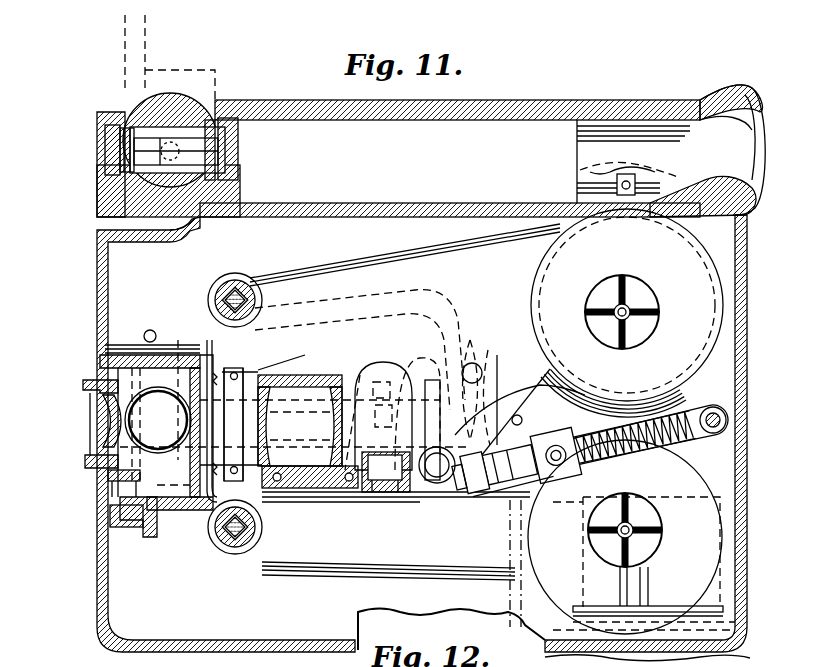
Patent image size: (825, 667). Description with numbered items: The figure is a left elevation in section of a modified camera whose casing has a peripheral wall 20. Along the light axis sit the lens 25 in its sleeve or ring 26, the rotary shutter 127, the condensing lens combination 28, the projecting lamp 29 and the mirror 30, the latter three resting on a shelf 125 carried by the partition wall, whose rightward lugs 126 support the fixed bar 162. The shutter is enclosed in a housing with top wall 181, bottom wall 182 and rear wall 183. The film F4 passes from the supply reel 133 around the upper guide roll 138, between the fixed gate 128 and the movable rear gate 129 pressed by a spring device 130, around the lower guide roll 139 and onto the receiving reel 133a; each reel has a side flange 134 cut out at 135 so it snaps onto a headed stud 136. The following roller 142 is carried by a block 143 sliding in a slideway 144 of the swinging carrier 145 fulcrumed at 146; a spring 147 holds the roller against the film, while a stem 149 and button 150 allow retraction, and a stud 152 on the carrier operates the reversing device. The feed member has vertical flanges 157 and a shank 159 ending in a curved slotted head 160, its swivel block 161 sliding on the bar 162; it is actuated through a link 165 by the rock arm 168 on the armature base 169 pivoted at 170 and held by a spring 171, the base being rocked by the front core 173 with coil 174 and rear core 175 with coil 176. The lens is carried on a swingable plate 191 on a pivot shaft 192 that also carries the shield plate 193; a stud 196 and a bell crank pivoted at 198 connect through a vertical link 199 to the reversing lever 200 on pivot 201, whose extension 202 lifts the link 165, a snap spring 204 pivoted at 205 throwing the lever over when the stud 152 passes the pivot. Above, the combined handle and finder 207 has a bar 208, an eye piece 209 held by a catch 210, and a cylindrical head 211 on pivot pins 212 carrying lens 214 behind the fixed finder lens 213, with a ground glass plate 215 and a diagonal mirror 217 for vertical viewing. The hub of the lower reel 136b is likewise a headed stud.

The peripheral wall 20 is at (478, 198).
The combined handle and finder 207 is at (583, 94).
The bar 208 is at (428, 121).
The eye piece 209 is at (707, 151).
The catch 210 is at (635, 178).
The cylindrical head 211 is at (170, 95).
The pivot pins 212 is at (210, 118).
The fixed finder lens 213 is at (103, 152).
The lens 214 is at (126, 127).
The ground glass plate 215 is at (240, 156).
The diagonal mirror 217 is at (142, 240).
The upper guide roll 138 is at (222, 282).
The lower guide roll 139 is at (224, 552).
The film F4 is at (330, 272).
The reversing lever 200 is at (415, 291).
The swingable plate 191 is at (100, 362).
The pivot shaft 192 is at (150, 330).
The top wall 181 is at (124, 352).
The vertical flanges 157 is at (182, 340).
The sleeve or ring 26 is at (82, 384).
The lens 25 is at (103, 420).
The shutter 127 is at (158, 420).
The vertical link 199 is at (174, 470).
The projecting stud 196 is at (107, 476).
The pivot 198 is at (109, 516).
The bottom wall 182 is at (150, 540).
The front or fixed gate 128 is at (205, 500).
The movable rear gate 129 is at (222, 366).
The spring device 130 is at (228, 378).
The shield plate 193 is at (272, 364).
The condensing lens combination 28 is at (283, 419).
The lugs 126 is at (300, 426).
The shelf 125 is at (345, 490).
The rear wall 183 is at (290, 500).
The projecting lamp 29 is at (383, 416).
The shank 159 is at (362, 372).
The swivel block or lug 161 is at (386, 472).
The mirror 30 is at (428, 382).
The fixed bar 162 is at (404, 360).
The snap spring 204 is at (430, 485).
The curved slotted head 160 is at (476, 362).
The pivot 205 is at (494, 372).
The stem 149 is at (498, 395).
The fixed fulcrum or pivot 201 is at (516, 414).
The driving or following roller 142 is at (590, 386).
The link 165 is at (624, 400).
The extension 202 is at (670, 403).
The supply reel 133 is at (652, 296).
The headed stud 136 is at (628, 298).
The cut out 135 is at (600, 302).
The side flange 134 is at (620, 304).
The spring 147 is at (738, 450).
The fulcrum 146 is at (727, 418).
The block 143 is at (556, 442).
The swinging arm or carrier 145 is at (483, 492).
The head or button 150 is at (464, 490).
The stud 152 is at (455, 495).
The slideway 144 is at (500, 500).
The spring 171 is at (508, 600).
The receiving reel 133a is at (663, 549).
The lower reel hub 136b is at (640, 528).
The coil 176 is at (720, 592).
The coil 174 is at (618, 590).
The reciprocating member 168 is at (640, 594).
The front magnet core 173 is at (605, 608).
The rear core 175 is at (738, 620).
The base 169 is at (747, 634).
The pivot 170 is at (750, 658).